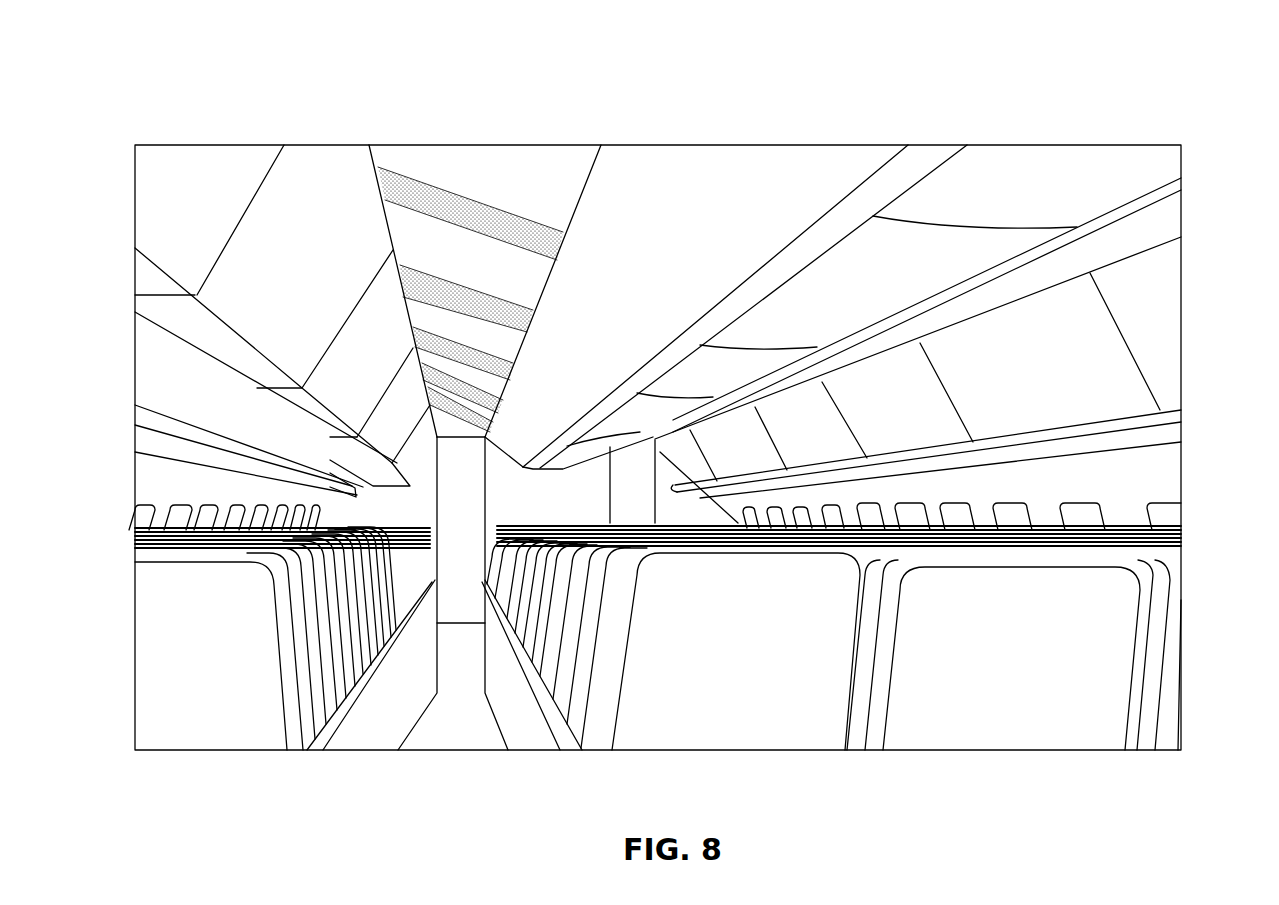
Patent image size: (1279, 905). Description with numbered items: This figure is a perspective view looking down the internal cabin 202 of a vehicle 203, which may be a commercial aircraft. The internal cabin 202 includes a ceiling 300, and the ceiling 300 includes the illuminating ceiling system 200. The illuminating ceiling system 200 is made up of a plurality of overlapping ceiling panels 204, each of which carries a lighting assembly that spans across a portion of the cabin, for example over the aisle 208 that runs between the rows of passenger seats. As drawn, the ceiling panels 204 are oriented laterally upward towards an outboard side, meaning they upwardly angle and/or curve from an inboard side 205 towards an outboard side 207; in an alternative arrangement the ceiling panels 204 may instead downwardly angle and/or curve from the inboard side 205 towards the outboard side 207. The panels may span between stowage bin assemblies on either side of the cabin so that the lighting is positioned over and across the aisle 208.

The illuminating ceiling system 200 is at (508, 116).
The internal cabin 202 is at (328, 106).
The vehicle 203 is at (1140, 90).
The ceiling panel 204 is at (542, 170).
The inboard side 205 is at (583, 178).
The outboard side 207 is at (372, 145).
The aisle 208 is at (427, 754).
The ceiling 300 is at (747, 138).